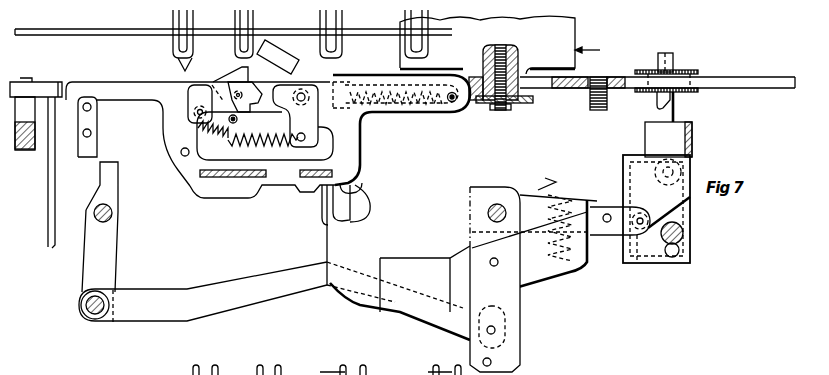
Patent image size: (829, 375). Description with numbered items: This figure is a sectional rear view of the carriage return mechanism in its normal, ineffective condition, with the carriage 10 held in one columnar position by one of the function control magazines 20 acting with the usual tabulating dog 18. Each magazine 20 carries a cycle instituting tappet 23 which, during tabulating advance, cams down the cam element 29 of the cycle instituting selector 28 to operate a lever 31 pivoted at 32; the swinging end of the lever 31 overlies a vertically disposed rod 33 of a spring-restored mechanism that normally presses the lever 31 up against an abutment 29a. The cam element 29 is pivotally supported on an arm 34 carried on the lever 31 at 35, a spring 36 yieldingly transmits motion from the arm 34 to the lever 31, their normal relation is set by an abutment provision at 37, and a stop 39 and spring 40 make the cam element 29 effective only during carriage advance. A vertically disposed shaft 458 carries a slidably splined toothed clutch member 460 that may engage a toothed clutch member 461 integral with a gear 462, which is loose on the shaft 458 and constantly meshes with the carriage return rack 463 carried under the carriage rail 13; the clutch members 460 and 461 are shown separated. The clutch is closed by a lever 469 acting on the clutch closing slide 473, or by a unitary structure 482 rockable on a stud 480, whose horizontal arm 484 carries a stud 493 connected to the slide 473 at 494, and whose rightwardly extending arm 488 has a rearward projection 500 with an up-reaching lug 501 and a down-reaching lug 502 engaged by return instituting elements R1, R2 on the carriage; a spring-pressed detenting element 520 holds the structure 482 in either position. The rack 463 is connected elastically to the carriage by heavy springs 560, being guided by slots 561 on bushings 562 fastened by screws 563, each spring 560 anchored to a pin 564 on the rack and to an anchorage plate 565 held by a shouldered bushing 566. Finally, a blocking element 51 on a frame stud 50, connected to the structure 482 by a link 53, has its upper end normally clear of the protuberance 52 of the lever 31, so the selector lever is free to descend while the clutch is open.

The carriage 10 is at (598, 50).
The carriage rail 13 is at (577, 27).
The tabulating dog 18 is at (290, 64).
The function control magazine 20 is at (238, 22).
The cycle instituting tappet 23 is at (176, 64).
The cycle instituting selector 28 is at (393, 158).
The cam element 29 is at (245, 66).
The abutment 29a is at (27, 80).
The lever 31 is at (104, 82).
The pivot 32 is at (453, 102).
The rod 33 is at (50, 173).
The arm 34 is at (200, 113).
The pivot 35 is at (320, 110).
The spring 36 is at (276, 152).
The abutment provision 37 is at (190, 100).
The stop 39 is at (251, 130).
The spring 40 is at (181, 152).
The stud 50 is at (112, 213).
The blocking element 51 is at (113, 267).
The protuberance 52 is at (82, 157).
The link 53 is at (237, 281).
The return instituting element R1 is at (308, 196).
The return instituting element R2 is at (222, 200).
The shaft 458 is at (666, 53).
The toothed clutch member 460 is at (692, 129).
The toothed clutch member 461 is at (660, 108).
The gear 462 is at (690, 70).
The carriage return rack 463 is at (765, 77).
The lever 469 is at (628, 171).
The clutch closing slide 473 is at (687, 220).
The stud 480 is at (497, 204).
The unitary structure 482 is at (469, 246).
The horizontal arm 484 is at (557, 197).
The rightwardly extending arm 488 is at (380, 257).
The stud 493 is at (640, 263).
The operative connection 494 is at (636, 232).
The rearward projection 500 is at (352, 223).
The up-reaching lug 501 is at (362, 181).
The down-reaching lug 502 is at (330, 222).
The spring-pressed detenting element 520 is at (506, 373).
The spring 560 is at (407, 110).
The slot 561 is at (567, 90).
The bushing 562 is at (515, 58).
The screw 563 is at (500, 111).
The pin 564 is at (330, 80).
The anchorage plate 565 is at (516, 104).
The shouldered bushing 566 is at (473, 101).